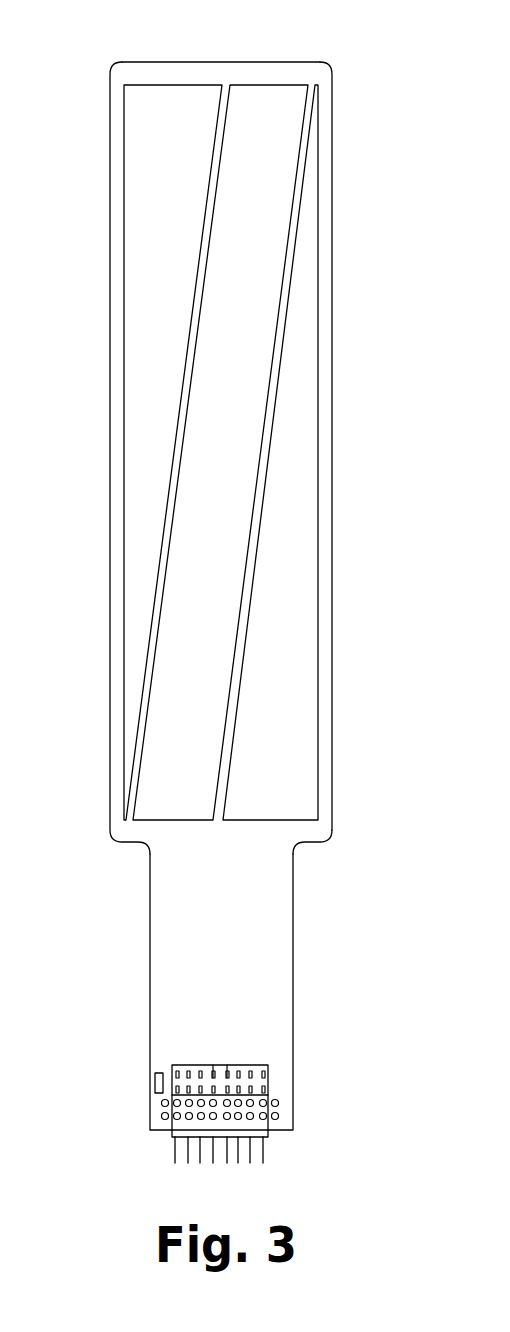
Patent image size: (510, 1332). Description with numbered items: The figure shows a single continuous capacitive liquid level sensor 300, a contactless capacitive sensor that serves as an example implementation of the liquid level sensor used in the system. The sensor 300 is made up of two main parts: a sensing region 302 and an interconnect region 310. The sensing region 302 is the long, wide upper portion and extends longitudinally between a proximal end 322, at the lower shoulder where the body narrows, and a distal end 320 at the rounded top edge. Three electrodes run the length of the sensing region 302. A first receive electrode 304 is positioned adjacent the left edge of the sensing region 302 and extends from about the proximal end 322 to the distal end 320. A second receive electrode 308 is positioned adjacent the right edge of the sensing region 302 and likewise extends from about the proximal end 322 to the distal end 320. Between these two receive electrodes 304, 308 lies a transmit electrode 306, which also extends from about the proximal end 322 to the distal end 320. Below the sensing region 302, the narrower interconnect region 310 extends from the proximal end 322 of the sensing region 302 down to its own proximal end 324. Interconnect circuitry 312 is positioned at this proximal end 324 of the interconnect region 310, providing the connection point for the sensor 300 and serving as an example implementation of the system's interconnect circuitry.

The single continuous capacitive liquid level sensor 300 is at (82, 58).
The sensing region 302 is at (110, 163).
The receive electrode (RX1) 304 is at (150, 235).
The transmit electrode (TX0) 306 is at (273, 100).
The receive electrode (RX0) 308 is at (302, 580).
The interconnect region 310 is at (150, 966).
The interconnect circuitry 312 is at (159, 1152).
The distal end 320 is at (181, 62).
The proximal end 322 is at (310, 845).
The proximal end 324 is at (282, 1138).